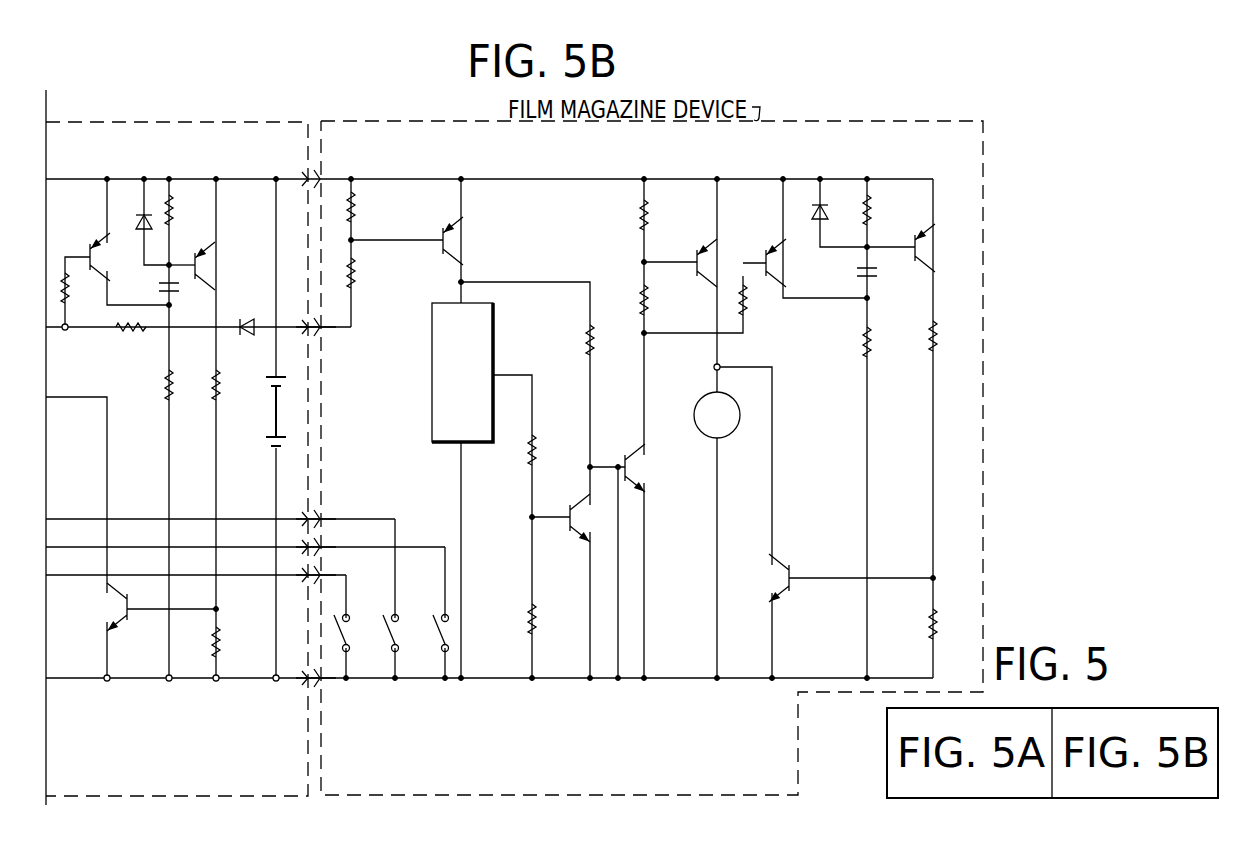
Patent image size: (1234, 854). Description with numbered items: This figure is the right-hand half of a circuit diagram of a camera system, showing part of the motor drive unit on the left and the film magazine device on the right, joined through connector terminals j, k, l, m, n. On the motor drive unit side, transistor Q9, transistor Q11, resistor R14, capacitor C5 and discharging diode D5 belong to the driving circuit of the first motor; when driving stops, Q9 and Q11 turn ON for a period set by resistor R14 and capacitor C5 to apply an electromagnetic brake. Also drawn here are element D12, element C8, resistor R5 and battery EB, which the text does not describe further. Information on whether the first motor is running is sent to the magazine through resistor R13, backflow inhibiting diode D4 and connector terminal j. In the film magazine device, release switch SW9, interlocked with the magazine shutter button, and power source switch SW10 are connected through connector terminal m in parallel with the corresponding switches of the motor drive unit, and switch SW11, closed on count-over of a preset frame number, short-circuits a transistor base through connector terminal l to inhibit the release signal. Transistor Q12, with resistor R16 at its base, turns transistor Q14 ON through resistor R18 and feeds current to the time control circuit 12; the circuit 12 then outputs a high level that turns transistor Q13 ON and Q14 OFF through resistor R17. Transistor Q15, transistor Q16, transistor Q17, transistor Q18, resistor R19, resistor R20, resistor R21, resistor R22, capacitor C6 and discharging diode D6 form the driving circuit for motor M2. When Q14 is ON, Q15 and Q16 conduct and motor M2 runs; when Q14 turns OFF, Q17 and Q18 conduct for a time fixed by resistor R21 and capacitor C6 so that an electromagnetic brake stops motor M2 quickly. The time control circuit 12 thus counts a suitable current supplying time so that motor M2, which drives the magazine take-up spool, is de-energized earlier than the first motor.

The diode D12 is at (63, 282).
The capacitor C8 is at (95, 267).
The discharging diode D5 is at (142, 220).
The capacitor C5 is at (158, 288).
The transistor Q9 is at (210, 262).
The resistor R13 is at (124, 330).
The resistor R14 is at (166, 384).
The backflow inhibiting diode D4 is at (244, 337).
The resistor R5 is at (222, 392).
The battery EB is at (272, 418).
The transistor Q11 is at (115, 605).
The connector terminal j is at (306, 322).
The connector terminal k is at (303, 515).
The connector terminal l is at (303, 545).
The connector terminal m is at (303, 578).
The connector terminal n is at (305, 683).
The resistor R16 is at (356, 272).
The transistor Q12 is at (455, 242).
The time control circuit 12 is at (432, 398).
The resistor R18 is at (588, 337).
The resistor R17 is at (530, 452).
The transistor Q13 is at (575, 512).
The transistor Q14 is at (633, 460).
The transistor Q15 is at (712, 256).
The transistor Q16 is at (780, 256).
The discharging diode D6 is at (820, 222).
The resistor R19 is at (648, 300).
The resistor R20 is at (748, 300).
The resistor R21 is at (864, 340).
The resistor R22 is at (930, 345).
The capacitor C6 is at (878, 274).
The motor M2 is at (717, 415).
The transistor Q17 is at (782, 578).
The transistor Q18 is at (922, 246).
The release switch SW9 is at (352, 625).
The power source switch SW10 is at (400, 625).
The switch SW11 is at (436, 622).